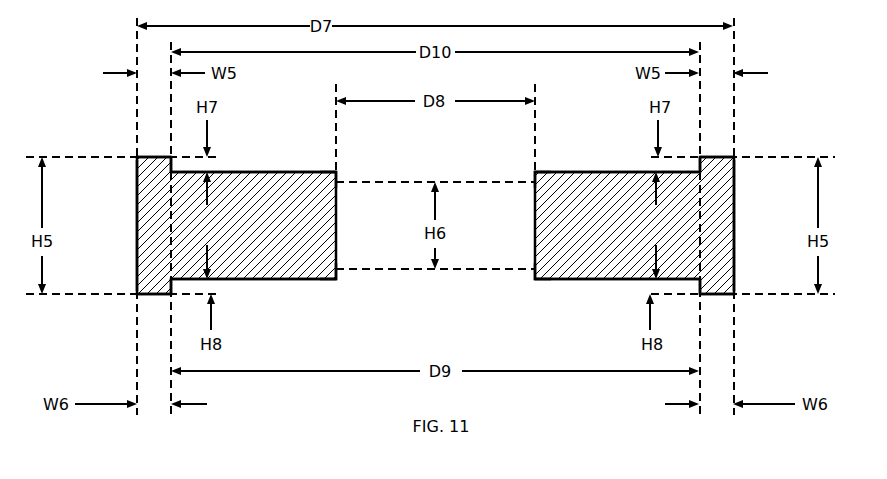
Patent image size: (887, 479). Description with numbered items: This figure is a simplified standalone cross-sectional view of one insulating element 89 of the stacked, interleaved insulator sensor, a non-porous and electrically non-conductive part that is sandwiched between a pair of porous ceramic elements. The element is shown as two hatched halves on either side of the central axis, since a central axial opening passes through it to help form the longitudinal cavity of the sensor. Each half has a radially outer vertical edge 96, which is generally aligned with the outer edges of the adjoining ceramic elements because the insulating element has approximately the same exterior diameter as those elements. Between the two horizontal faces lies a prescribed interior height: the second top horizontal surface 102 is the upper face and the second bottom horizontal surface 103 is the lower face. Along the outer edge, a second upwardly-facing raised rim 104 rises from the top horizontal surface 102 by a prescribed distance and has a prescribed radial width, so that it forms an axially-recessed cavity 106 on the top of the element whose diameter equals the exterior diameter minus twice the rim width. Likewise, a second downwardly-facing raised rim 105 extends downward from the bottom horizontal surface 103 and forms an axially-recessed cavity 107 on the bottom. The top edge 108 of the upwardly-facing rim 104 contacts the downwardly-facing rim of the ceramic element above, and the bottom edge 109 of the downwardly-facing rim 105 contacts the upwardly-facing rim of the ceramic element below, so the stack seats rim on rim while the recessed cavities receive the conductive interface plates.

The insulating element 89 is at (233, 236).
The radially outer vertical edge 96 is at (137, 208).
The second top horizontal surface 102 is at (318, 176).
The second bottom horizontal surface 103 is at (318, 280).
The second upwardly-facing raised rim 104 is at (153, 157).
The second downwardly-facing raised rim 105 is at (152, 296).
The axially-recessed cavity 106 is at (266, 170).
The axially-recessed cavity 107 is at (282, 282).
The top edge 108 is at (163, 152).
The bottom edge 109 is at (166, 298).